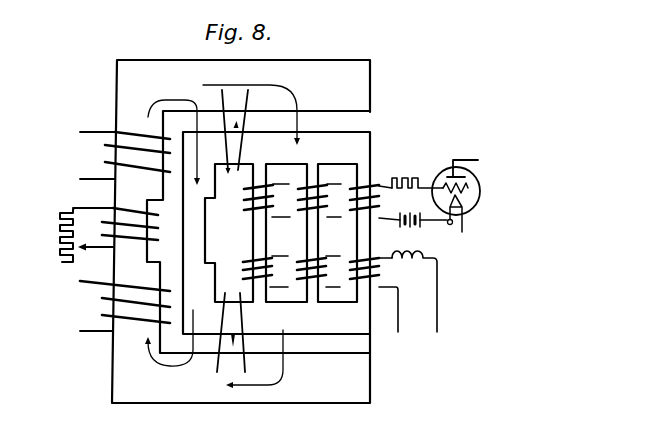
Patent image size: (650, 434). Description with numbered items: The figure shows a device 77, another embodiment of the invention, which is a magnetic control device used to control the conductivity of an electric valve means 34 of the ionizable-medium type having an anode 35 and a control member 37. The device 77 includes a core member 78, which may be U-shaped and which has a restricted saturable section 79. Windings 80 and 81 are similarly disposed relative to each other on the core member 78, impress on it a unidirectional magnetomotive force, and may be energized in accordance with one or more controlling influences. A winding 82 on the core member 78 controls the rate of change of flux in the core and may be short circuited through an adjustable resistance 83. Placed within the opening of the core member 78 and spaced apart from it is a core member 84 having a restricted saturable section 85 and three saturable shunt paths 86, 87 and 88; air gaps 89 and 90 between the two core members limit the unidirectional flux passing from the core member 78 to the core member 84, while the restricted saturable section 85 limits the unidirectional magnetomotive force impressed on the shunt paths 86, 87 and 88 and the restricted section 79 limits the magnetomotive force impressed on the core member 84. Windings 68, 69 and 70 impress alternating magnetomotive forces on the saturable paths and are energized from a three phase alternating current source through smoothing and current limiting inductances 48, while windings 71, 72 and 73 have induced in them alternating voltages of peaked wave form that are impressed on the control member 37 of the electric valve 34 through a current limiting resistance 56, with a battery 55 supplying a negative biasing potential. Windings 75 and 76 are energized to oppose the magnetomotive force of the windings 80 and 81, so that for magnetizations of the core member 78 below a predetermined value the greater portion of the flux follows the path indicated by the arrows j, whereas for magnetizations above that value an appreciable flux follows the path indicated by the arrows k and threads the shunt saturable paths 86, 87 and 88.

The device 77 is at (106, 92).
The core member 78 is at (120, 115).
The restricted saturable section 85 is at (197, 234).
The core member 84 is at (292, 328).
The saturable shunt path 86 is at (265, 243).
The saturable shunt path 87 is at (315, 244).
The saturable shunt path 88 is at (367, 243).
The air gap 89 is at (360, 124).
The air gap 90 is at (359, 350).
The winding 71 is at (245, 199).
The winding 72 is at (300, 215).
The winding 73 is at (355, 215).
The winding 68 is at (244, 276).
The winding 69 is at (300, 276).
The winding 70 is at (352, 265).
The smoothing and current limiting inductance 48 is at (414, 291).
The winding 75 is at (235, 143).
The winding 76 is at (224, 317).
The winding 80 is at (106, 152).
The winding 82 is at (103, 221).
The adjustable resistance 83 is at (60, 236).
The restricted saturable section 79 is at (130, 249).
The winding 81 is at (102, 299).
The current limiting resistance 56 is at (417, 174).
The battery 55 is at (420, 227).
The electric valve means 34 is at (480, 180).
The anode 35 is at (452, 168).
The control member 37 is at (468, 188).
The flux path arrows j is at (164, 99).
The flux path arrows k is at (293, 85).